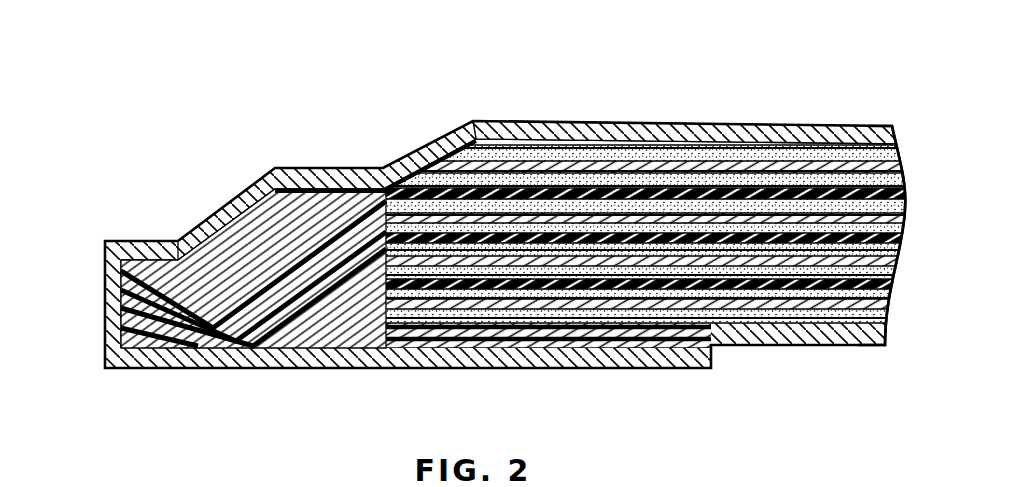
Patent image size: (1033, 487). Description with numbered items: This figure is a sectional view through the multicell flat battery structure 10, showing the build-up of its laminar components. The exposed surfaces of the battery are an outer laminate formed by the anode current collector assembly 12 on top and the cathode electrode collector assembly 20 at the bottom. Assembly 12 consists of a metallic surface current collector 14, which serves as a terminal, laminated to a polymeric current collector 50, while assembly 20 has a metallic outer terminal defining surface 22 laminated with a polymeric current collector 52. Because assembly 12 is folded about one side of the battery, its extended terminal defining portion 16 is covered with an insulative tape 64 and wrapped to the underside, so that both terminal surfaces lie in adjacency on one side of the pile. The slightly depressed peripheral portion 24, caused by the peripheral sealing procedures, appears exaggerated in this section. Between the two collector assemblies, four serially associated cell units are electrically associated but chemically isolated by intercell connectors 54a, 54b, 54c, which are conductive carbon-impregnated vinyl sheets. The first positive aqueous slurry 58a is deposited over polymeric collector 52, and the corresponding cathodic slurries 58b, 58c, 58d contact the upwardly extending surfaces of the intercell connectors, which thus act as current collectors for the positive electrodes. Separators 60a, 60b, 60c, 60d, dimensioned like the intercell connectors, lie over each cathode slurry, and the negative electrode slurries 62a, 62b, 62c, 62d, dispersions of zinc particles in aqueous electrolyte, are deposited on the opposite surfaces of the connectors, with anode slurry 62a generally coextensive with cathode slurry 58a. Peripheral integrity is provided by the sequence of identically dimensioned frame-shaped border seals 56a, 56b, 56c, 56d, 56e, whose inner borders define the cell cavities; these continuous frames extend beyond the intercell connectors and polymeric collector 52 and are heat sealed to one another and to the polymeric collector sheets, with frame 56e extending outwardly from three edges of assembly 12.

The battery structure 10 is at (788, 88).
The anode current collector assembly 12 is at (893, 118).
The metallic surface current collector 14 is at (865, 116).
The terminal defining portion 16 is at (393, 369).
The cathode electrode collector assembly 20 is at (880, 318).
The metallic current collector outer terminal defining surface 22 is at (855, 338).
The depressed peripheral portion 24 is at (295, 146).
The polymeric current collector 50 is at (888, 141).
The polymeric current collector 52 is at (878, 311).
The intercell connector 54a is at (883, 274).
The intercell connector 54b is at (895, 232).
The intercell connector 54c is at (897, 186).
The frame-shaped border seal 56a is at (102, 343).
The frame-shaped border seal 56b is at (118, 323).
The frame-shaped border seal 56c is at (125, 292).
The frame-shaped border seal 56d is at (125, 266).
The frame-shaped border seal 56e is at (112, 256).
The positive aqueous slurry 58a is at (600, 310).
The cathodic slurry 58b is at (713, 267).
The cathodic slurry 58c is at (642, 207).
The cathodic slurry 58d is at (537, 163).
The separator 60a is at (879, 296).
The separator 60b is at (889, 251).
The separator 60c is at (897, 210).
The separator 60d is at (892, 163).
The anode slurry 62a is at (650, 290).
The negative electrode slurry 62b is at (800, 242).
The negative electrode slurry 62c is at (667, 183).
The negative electrode slurry 62d is at (567, 140).
The insulative tape 64 is at (712, 342).